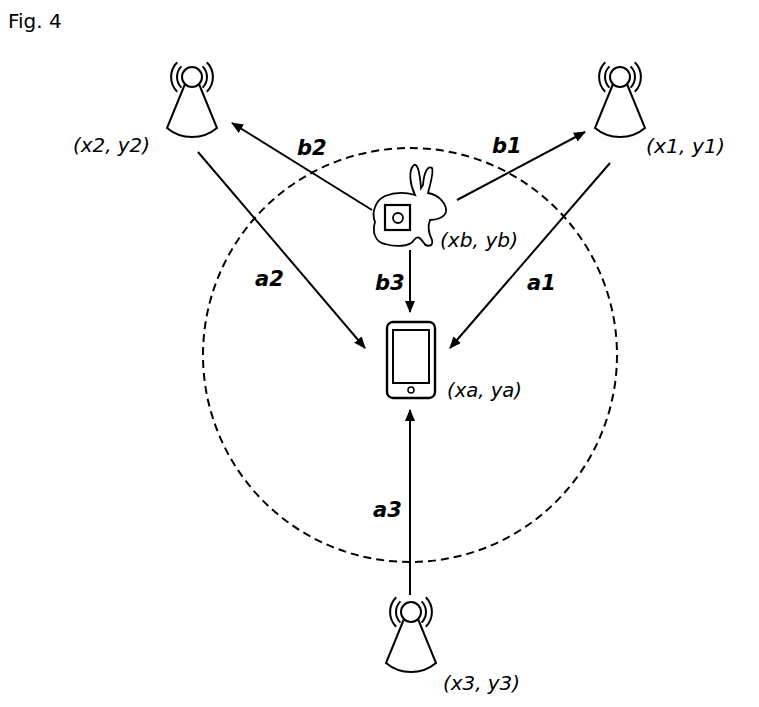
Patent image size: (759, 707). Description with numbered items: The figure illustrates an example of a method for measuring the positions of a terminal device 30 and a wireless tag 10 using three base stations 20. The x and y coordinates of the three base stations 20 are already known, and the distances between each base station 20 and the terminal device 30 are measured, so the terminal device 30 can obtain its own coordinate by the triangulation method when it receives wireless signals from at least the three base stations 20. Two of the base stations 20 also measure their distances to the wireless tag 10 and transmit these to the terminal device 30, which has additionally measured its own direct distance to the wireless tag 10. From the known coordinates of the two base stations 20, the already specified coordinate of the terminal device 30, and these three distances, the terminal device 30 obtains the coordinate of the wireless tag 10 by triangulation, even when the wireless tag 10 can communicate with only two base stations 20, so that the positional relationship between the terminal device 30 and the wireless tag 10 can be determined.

The wireless tag 10 is at (392, 204).
The base station 20 is at (171, 113).
The terminal device 30 is at (386, 373).